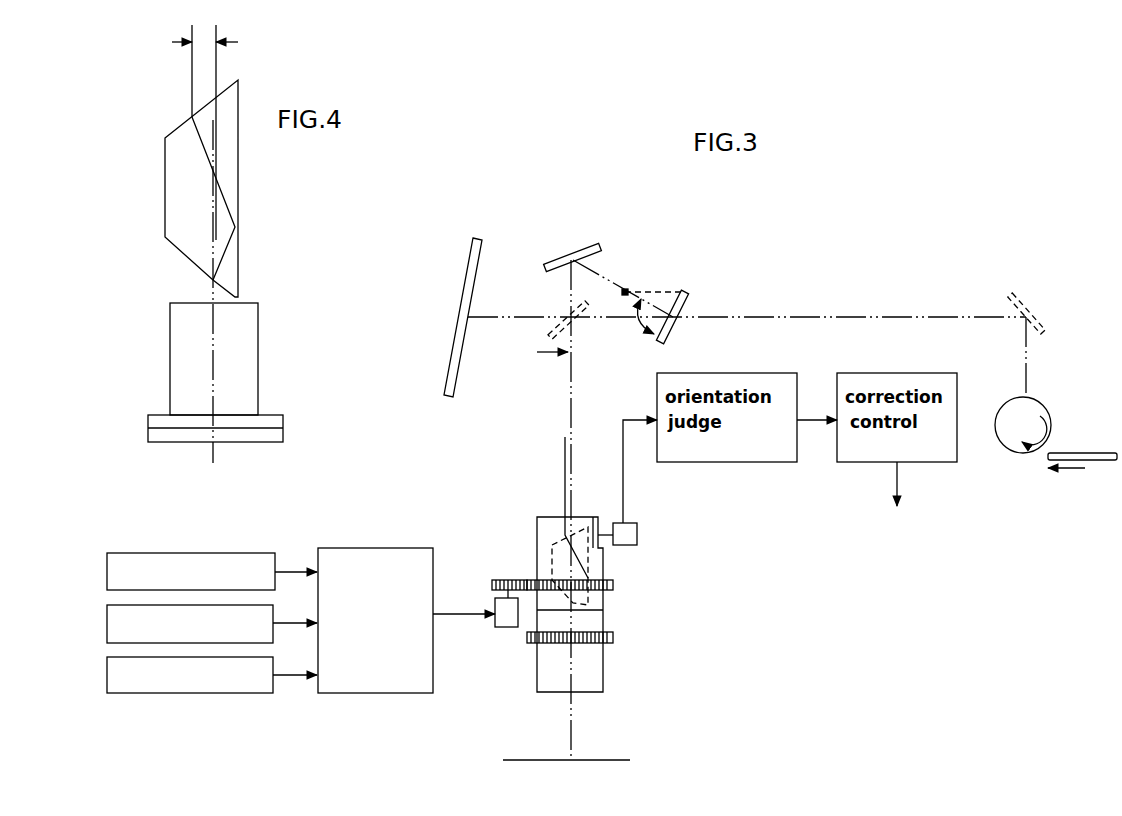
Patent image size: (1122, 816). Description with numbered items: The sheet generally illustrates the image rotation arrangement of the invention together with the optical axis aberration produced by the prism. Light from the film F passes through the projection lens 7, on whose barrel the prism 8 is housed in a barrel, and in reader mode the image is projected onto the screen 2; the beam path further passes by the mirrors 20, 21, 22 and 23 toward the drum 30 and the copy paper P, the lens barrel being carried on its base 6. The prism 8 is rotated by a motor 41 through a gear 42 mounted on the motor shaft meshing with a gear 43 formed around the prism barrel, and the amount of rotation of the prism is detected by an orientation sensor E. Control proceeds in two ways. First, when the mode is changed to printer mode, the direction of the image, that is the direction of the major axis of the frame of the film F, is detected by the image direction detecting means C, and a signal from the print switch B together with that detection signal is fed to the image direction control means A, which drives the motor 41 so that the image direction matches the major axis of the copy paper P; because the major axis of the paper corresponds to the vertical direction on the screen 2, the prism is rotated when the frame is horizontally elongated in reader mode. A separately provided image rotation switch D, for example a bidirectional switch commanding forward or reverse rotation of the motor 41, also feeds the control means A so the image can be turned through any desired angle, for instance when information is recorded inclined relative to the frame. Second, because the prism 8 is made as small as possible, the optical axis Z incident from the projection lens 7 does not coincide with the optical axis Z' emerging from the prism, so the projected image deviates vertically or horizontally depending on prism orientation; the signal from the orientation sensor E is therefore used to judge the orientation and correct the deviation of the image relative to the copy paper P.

In FIG. 3, the screen 2 is at (474, 238).
In FIG. 3, the mirror 20 is at (592, 243).
In FIG. 3, the rotatable mirror 21 is at (688, 297).
In FIG. 3, the half mirror 22 is at (553, 334).
In FIG. 3, the mirror 23 is at (1012, 297).
In FIG. 3, the photosensitive drum 30 is at (1007, 440).
In FIG. 4, the prism 8 is at (165, 197).
In FIG. 3, the prism 8 is at (590, 563).
In FIG. 4, the projection lens 7 is at (183, 357).
In FIG. 3, the projection lens 7 is at (599, 604).
In FIG. 4, the base 6 is at (272, 415).
In FIG. 3, the motor 41 is at (505, 627).
In FIG. 3, the gear 42 is at (502, 564).
In FIG. 3, the gear 43 is at (613, 590).
In FIG. 3, the image direction control means A is at (368, 688).
In FIG. 3, the print switch B is at (133, 553).
In FIG. 3, the image direction detecting means C is at (107, 633).
In FIG. 3, the image rotation switch D is at (107, 688).
In FIG. 3, the orientation sensor E is at (637, 531).
In FIG. 3, the film F is at (613, 760).
In FIG. 3, the copy paper P is at (1087, 453).
In FIG. 4, the optical axis Z is at (238, 132).
In FIG. 4, the optical axis Z' is at (169, 71).